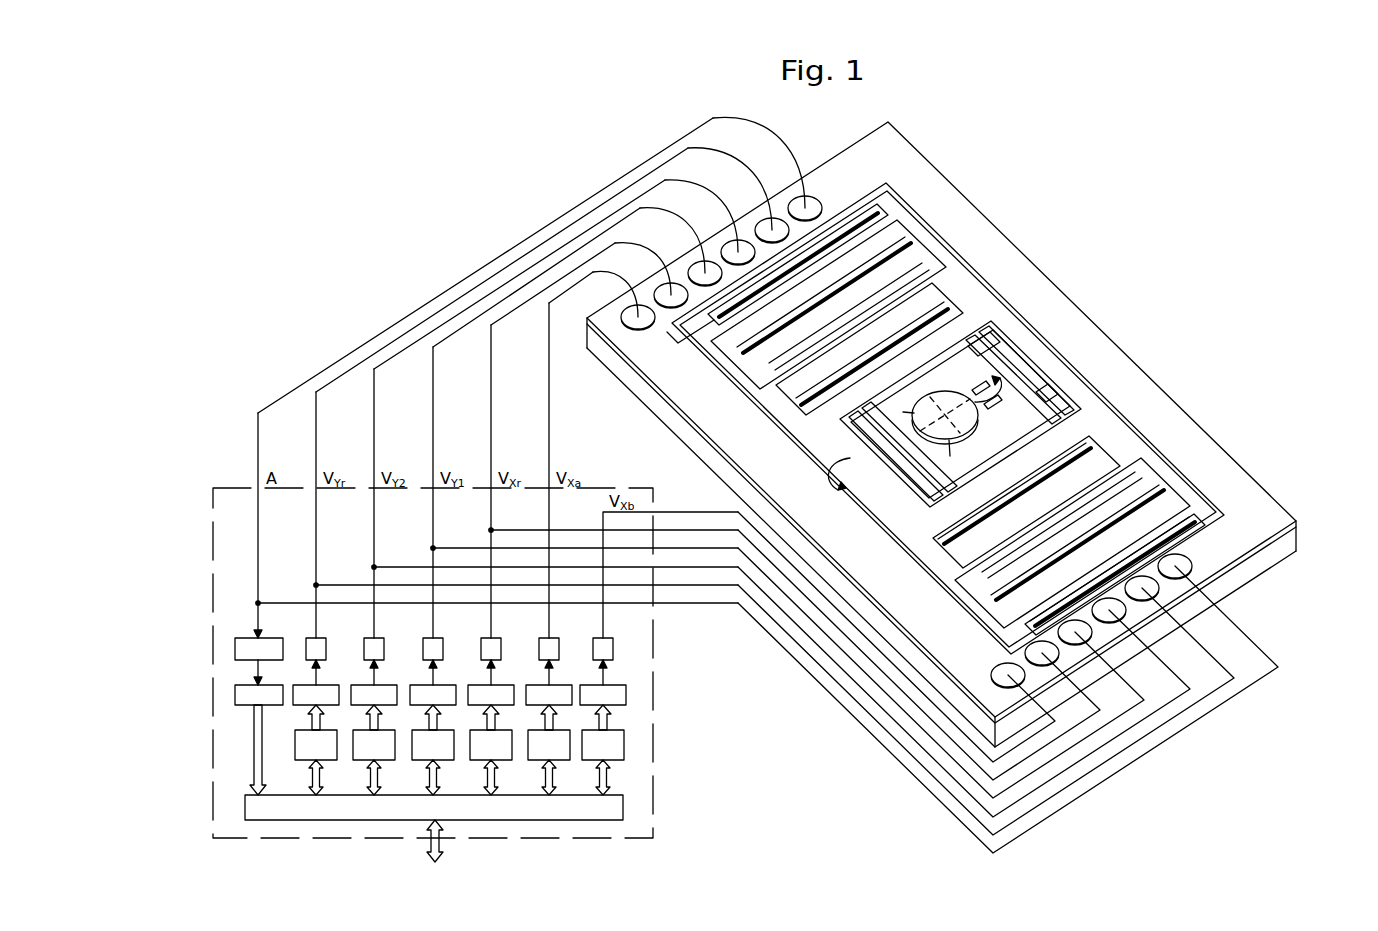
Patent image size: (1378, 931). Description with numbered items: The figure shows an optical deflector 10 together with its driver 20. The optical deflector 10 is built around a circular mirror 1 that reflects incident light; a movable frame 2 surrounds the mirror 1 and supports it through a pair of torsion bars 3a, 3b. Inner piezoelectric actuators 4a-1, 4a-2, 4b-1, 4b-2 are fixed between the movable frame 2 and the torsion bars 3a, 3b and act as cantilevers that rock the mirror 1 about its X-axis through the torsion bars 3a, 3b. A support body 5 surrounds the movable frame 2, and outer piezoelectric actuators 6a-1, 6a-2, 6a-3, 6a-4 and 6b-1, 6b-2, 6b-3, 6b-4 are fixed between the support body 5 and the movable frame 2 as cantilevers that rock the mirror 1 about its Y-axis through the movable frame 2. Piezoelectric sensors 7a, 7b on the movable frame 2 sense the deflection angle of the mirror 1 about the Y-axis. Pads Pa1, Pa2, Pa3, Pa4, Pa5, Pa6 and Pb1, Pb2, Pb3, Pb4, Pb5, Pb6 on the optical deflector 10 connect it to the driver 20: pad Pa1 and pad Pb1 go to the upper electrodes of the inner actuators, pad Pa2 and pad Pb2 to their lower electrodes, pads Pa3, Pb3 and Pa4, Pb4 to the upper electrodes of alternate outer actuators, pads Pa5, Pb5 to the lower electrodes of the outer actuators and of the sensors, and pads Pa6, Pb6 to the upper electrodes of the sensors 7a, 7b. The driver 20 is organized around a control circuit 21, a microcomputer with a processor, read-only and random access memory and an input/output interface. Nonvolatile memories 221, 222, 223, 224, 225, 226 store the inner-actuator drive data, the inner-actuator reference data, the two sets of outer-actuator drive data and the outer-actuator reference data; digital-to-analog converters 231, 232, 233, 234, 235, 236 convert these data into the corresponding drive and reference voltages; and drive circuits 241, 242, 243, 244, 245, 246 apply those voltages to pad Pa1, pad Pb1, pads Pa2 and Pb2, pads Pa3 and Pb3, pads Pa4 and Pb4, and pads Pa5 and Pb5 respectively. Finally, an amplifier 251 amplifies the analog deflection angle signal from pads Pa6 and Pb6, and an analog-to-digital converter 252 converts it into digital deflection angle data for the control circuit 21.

The mirror 1 is at (977, 395).
The movable frame 2 is at (1062, 400).
The torsion bar 3a is at (1052, 410).
The torsion bar 3b is at (1082, 430).
The inner piezoelectric actuator 4a-1 is at (1008, 350).
The inner piezoelectric actuator 4a-2 is at (850, 458).
The inner piezoelectric actuator 4b-1 is at (1092, 440).
The inner piezoelectric actuator 4b-2 is at (885, 530).
The support body 5 is at (1247, 522).
The outer piezoelectric actuator 6a-1 is at (954, 280).
The outer piezoelectric actuator 6a-2 is at (931, 255).
The outer piezoelectric actuator 6a-3 is at (908, 232).
The outer piezoelectric actuator 6a-4 is at (886, 208).
The outer piezoelectric actuator 6b-1 is at (1166, 487).
The outer piezoelectric actuator 6b-2 is at (1143, 463).
The outer piezoelectric actuator 6b-3 is at (1119, 440).
The outer piezoelectric actuator 6b-4 is at (1095, 416).
The piezoelectric sensor 7a is at (994, 325).
The piezoelectric sensor 7b is at (1102, 455).
The optical deflector 10 is at (1197, 181).
The driver 20 is at (655, 716).
The control circuit 21 is at (623, 807).
The nonvolatile memory 221 is at (555, 730).
The nonvolatile memory 222 is at (609, 730).
The nonvolatile memory 223 is at (497, 730).
The nonvolatile memory 224 is at (439, 730).
The nonvolatile memory 225 is at (380, 730).
The nonvolatile memory 226 is at (322, 730).
The digital-to-analog converter 231 is at (555, 685).
The digital-to-analog converter 232 is at (609, 685).
The digital-to-analog converter 233 is at (497, 685).
The digital-to-analog converter 234 is at (439, 685).
The digital-to-analog converter 235 is at (380, 685).
The digital-to-analog converter 236 is at (322, 685).
The drive circuit 241 is at (554, 638).
The drive circuit 242 is at (608, 638).
The drive circuit 243 is at (496, 638).
The drive circuit 244 is at (438, 638).
The drive circuit 245 is at (379, 638).
The drive circuit 246 is at (321, 638).
The amplifier 251 is at (264, 638).
The analog-to-digital converter 252 is at (264, 685).
The pad Pa1 is at (638, 317).
The pad Pa2 is at (671, 295).
The pad Pa3 is at (705, 273).
The pad Pa4 is at (738, 252).
The pad Pa5 is at (772, 230).
The pad Pa6 is at (713, 118).
The pad Pb1 is at (1008, 675).
The pad Pb2 is at (1042, 653).
The pad Pb3 is at (1075, 632).
The pad Pb4 is at (1109, 610).
The pad Pb5 is at (1142, 588).
The pad Pb6 is at (1175, 566).